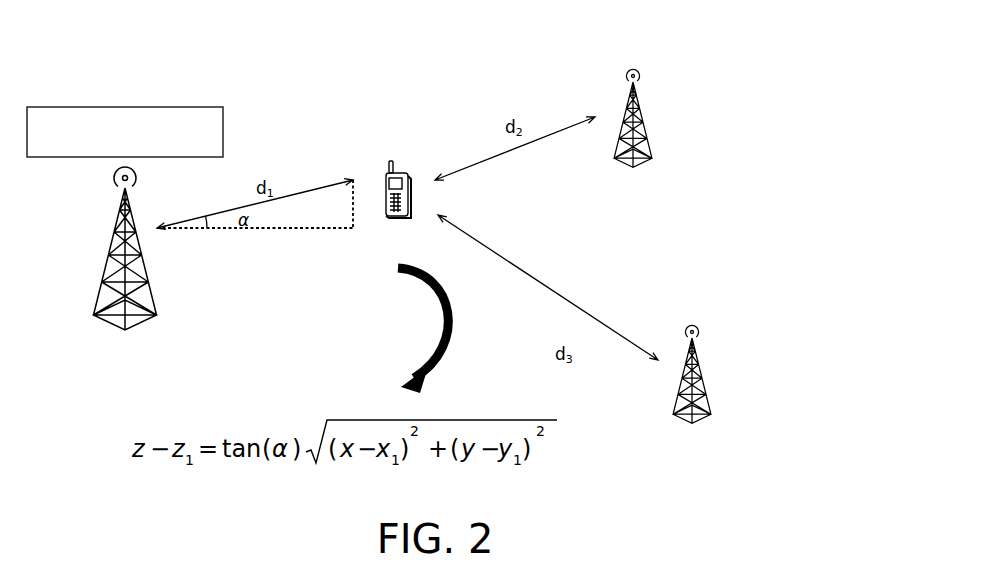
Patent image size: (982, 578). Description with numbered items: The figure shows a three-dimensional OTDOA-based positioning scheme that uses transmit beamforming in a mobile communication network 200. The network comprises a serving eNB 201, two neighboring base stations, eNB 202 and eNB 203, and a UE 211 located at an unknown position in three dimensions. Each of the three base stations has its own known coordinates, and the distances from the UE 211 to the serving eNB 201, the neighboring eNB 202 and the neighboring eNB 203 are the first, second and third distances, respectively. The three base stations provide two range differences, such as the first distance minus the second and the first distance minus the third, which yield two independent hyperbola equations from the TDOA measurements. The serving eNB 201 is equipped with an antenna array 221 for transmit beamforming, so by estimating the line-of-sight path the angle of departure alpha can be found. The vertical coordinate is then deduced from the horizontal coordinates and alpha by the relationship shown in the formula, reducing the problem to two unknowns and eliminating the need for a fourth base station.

The mobile communication network 200 is at (826, 56).
The serving eNB 201 is at (102, 262).
The neighboring eNB 202 is at (632, 65).
The neighboring eNB 203 is at (692, 323).
The UE 211 is at (392, 164).
The antenna array 221 is at (128, 106).